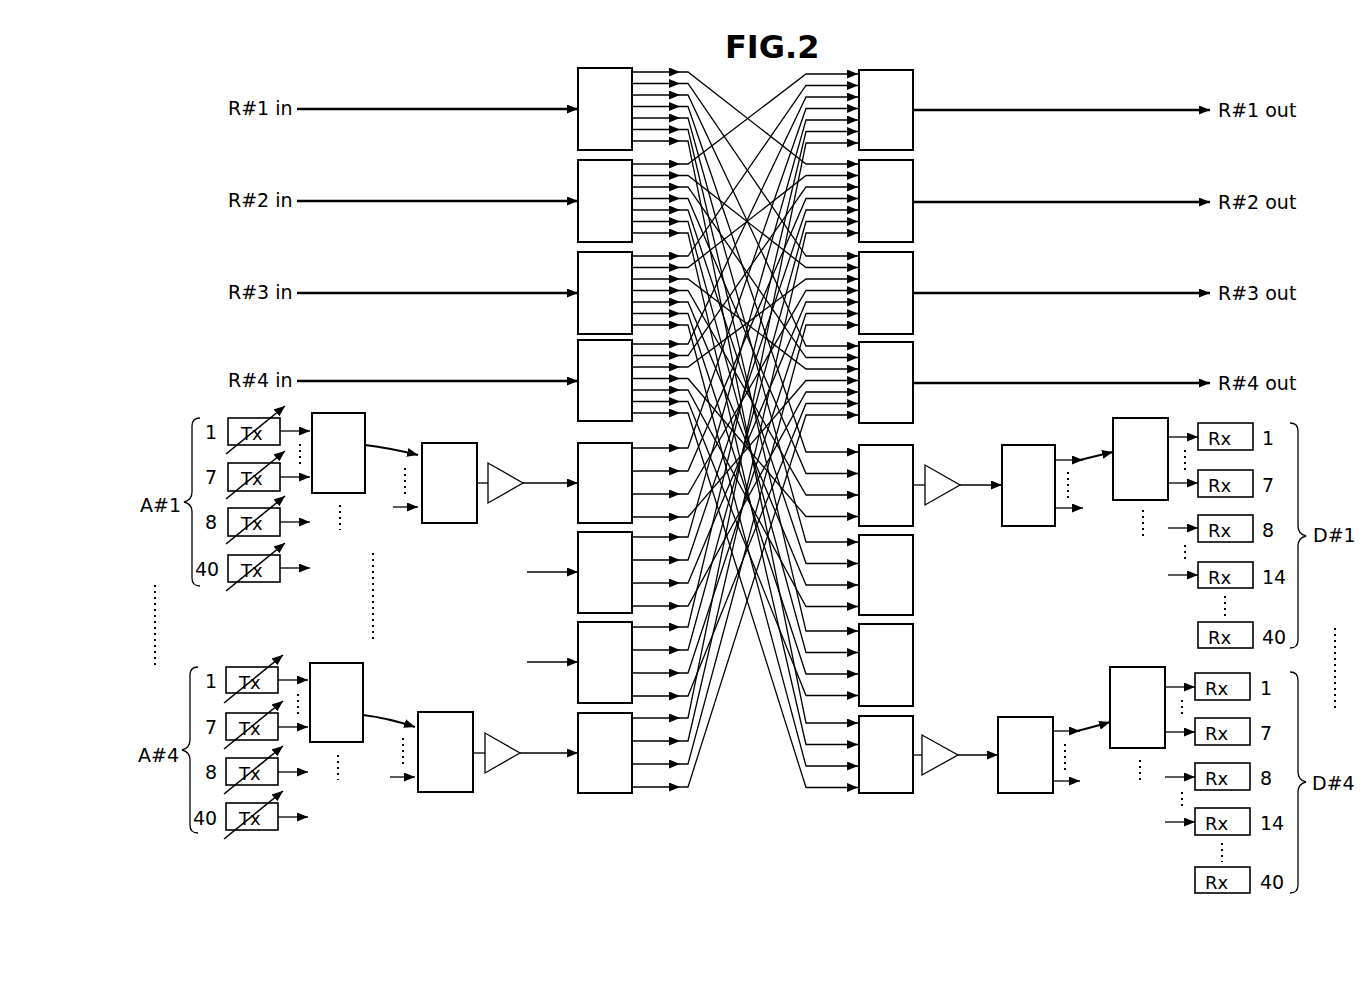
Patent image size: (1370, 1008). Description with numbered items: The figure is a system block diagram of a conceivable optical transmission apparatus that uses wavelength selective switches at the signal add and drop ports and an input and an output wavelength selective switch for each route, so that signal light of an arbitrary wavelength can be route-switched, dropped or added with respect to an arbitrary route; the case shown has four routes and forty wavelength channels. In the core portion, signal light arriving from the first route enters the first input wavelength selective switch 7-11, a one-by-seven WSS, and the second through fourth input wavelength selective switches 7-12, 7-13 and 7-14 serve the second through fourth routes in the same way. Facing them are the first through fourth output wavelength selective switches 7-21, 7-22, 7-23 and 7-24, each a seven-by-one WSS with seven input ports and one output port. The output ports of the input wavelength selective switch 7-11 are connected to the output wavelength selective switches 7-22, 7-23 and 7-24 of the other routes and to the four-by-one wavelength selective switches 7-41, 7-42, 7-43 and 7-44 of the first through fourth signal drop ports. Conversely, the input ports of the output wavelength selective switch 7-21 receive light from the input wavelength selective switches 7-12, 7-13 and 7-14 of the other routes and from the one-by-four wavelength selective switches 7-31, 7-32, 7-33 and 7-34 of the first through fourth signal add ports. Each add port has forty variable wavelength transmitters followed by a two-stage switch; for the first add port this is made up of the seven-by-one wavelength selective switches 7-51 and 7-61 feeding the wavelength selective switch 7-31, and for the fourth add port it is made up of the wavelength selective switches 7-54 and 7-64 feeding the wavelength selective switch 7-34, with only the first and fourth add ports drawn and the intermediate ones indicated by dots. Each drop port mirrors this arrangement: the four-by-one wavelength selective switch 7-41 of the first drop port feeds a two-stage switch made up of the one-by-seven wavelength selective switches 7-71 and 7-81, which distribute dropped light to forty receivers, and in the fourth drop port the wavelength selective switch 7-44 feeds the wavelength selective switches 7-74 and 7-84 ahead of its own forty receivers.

The first input wavelength selective switch 7-11 is at (578, 80).
The second input wavelength selective switch 7-12 is at (578, 172).
The third input wavelength selective switch 7-13 is at (578, 264).
The fourth input wavelength selective switch 7-14 is at (578, 352).
The first output wavelength selective switch 7-21 is at (913, 132).
The second output wavelength selective switch 7-22 is at (913, 222).
The third output wavelength selective switch 7-23 is at (913, 313).
The fourth output wavelength selective switch 7-24 is at (913, 403).
The wavelength selective switch (1x4 WSS) of first signal add port 7-31 is at (576, 450).
The wavelength selective switch (1x4 WSS) of second signal add port 7-32 is at (574, 541).
The wavelength selective switch (1x4 WSS) of third signal add port 7-33 is at (574, 628).
The wavelength selective switch (1x4 WSS) of fourth signal add port 7-34 is at (574, 720).
The wavelength selective switch (4x1 WSS) of first signal drop port 7-41 is at (913, 514).
The wavelength selective switch (4x1 WSS) of second signal drop port 7-42 is at (913, 594).
The wavelength selective switch (4x1 WSS) of third signal drop port 7-43 is at (913, 690).
The wavelength selective switch (4x1 WSS) of fourth signal drop port 7-44 is at (880, 793).
The wavelength selective switch (7x1 WSS) of first add port 2-stage switch 7-51 is at (365, 425).
The wavelength selective switch (7x1 WSS) of fourth add port 2-stage switch 7-54 is at (363, 676).
The wavelength selective switch (7x1 WSS) of first add port 2-stage switch 7-61 is at (450, 523).
The wavelength selective switch (7x1 WSS) of fourth add port 2-stage switch 7-64 is at (445, 792).
The wavelength selective switch (1x7 WSS) of first drop port 2-stage switch 7-71 is at (1030, 526).
The wavelength selective switch (1x7 WSS) of fourth drop port 2-stage switch 7-74 is at (1027, 793).
The wavelength selective switch (1x7 WSS) of first drop port 2-stage switch 7-81 is at (1113, 430).
The wavelength selective switch (1x7 WSS) of fourth drop port 2-stage switch 7-84 is at (1110, 680).